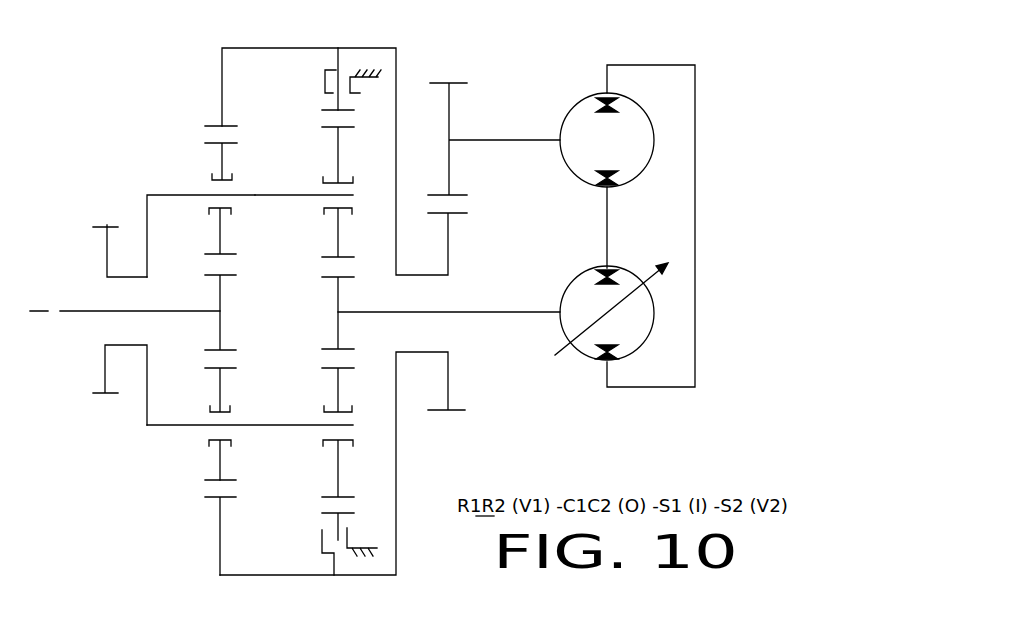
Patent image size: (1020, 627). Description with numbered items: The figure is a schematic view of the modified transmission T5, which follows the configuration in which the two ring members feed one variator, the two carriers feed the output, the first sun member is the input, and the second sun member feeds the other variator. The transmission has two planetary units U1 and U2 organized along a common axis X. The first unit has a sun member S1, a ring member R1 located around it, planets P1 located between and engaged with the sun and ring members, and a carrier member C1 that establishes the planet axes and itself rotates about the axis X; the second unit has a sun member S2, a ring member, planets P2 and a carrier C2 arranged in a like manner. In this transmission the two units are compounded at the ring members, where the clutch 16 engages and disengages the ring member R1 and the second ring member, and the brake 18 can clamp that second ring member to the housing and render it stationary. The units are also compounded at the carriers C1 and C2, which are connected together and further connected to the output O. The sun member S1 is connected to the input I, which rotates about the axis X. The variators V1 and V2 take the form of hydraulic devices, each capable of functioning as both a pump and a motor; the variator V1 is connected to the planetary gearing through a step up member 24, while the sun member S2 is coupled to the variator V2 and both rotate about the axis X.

The transmission T5 is at (158, 77).
The lock brake L is at (343, 65).
The clutch 16 is at (323, 89).
The brake 18 is at (360, 90).
The ring member R1 is at (219, 123).
The carrier member C1 is at (176, 195).
The carrier C2 is at (279, 197).
The output O is at (105, 222).
The planets P1 is at (222, 238).
The planets P2 is at (336, 163).
The sun member S1 is at (221, 292).
The sun member S2 is at (338, 303).
The planetary unit U1 is at (187, 486).
The planetary unit U2 is at (309, 538).
The input I is at (95, 313).
The common axis X is at (33, 302).
The step up member 24 is at (450, 162).
The variator V1 is at (569, 104).
The variator V2 is at (574, 357).